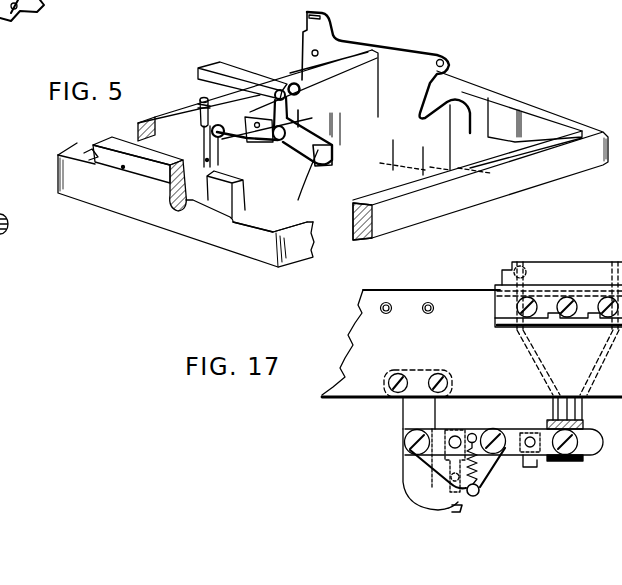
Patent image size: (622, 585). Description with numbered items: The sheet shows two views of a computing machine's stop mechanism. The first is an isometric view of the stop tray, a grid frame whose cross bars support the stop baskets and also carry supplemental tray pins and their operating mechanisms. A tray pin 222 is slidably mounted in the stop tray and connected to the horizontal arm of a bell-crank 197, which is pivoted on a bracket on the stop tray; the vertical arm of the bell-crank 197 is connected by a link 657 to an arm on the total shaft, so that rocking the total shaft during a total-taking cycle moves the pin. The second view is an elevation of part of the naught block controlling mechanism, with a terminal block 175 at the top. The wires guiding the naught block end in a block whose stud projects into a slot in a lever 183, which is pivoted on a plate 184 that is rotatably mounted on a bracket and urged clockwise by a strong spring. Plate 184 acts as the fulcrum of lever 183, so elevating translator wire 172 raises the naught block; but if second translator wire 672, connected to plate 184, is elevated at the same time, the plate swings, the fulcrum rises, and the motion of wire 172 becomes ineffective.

In FIG. 5, the link 657 is at (210, 66).
In FIG. 5, the bell-crank 197 is at (330, 139).
In FIG. 5, the tray pin 222 is at (299, 198).
In FIG. 17, the terminal block 175 is at (558, 328).
In FIG. 17, the lever 183 is at (513, 442).
In FIG. 17, the translator wire 172 is at (535, 462).
In FIG. 17, the plate 184 is at (440, 438).
In FIG. 17, the second translator wire 672 is at (452, 512).